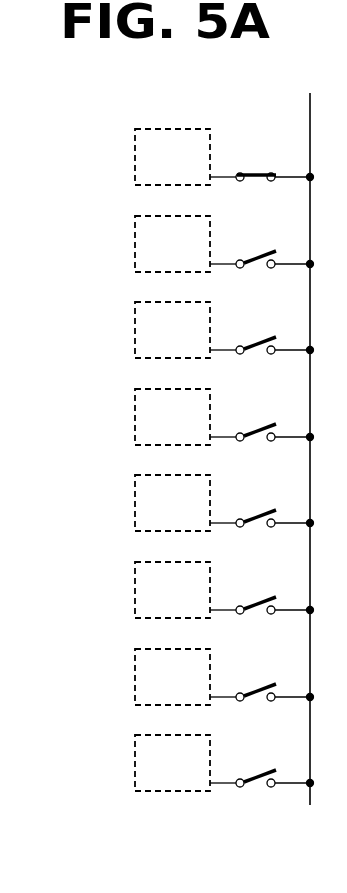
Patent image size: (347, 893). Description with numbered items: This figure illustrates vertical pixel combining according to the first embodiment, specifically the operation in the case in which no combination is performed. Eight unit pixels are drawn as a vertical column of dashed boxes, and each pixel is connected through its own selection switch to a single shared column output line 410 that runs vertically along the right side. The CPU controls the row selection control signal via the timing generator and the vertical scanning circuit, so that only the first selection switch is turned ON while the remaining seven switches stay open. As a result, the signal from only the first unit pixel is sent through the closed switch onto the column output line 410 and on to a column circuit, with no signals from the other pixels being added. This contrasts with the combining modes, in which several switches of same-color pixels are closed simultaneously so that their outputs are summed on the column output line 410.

The column output line 410 is at (308, 107).